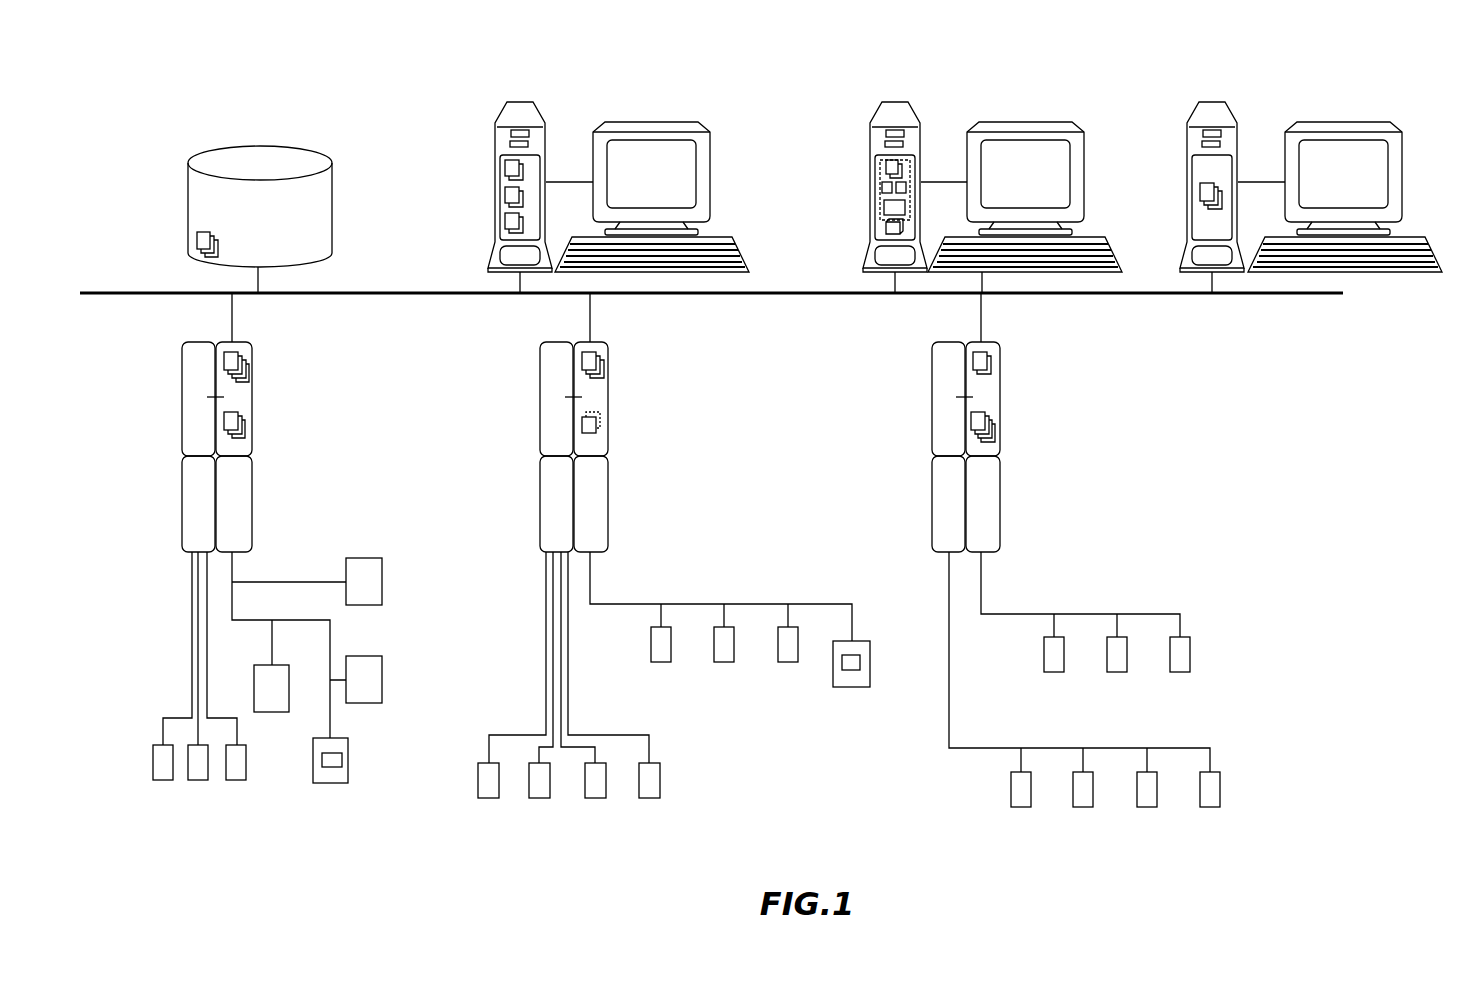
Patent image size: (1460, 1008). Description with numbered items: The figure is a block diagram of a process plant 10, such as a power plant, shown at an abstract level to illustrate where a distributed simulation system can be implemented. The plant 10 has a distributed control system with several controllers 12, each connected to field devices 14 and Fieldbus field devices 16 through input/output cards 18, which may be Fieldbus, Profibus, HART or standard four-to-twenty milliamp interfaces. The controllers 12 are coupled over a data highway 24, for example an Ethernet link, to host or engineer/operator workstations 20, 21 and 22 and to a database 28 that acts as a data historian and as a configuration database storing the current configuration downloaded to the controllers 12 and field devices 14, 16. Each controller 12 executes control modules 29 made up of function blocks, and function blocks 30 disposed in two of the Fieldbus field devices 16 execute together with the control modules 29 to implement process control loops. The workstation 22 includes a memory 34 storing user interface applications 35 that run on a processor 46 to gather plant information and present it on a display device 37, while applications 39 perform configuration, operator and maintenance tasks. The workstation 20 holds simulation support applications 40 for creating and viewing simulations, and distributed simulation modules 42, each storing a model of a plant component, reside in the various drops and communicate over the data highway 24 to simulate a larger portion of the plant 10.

The plant 10 is at (736, 88).
The controllers 12 is at (222, 342).
The field devices 14 is at (160, 775).
The Fieldbus field devices 16 is at (363, 595).
The input/output cards 18 is at (199, 510).
The workstation 20 is at (895, 101).
The workstation 21 is at (1212, 101).
The workstation 22 is at (520, 101).
The data highway 24 is at (372, 291).
The database 28 is at (188, 210).
The control modules 29 is at (232, 434).
The function blocks 30 is at (342, 760).
The memory 34 is at (880, 204).
The user interface applications 35 is at (505, 168).
The display device 37 is at (710, 180).
The applications 39 is at (505, 220).
The simulation support applications 40 is at (882, 187).
The simulation modules 42 is at (197, 241).
The processor 46 is at (886, 228).